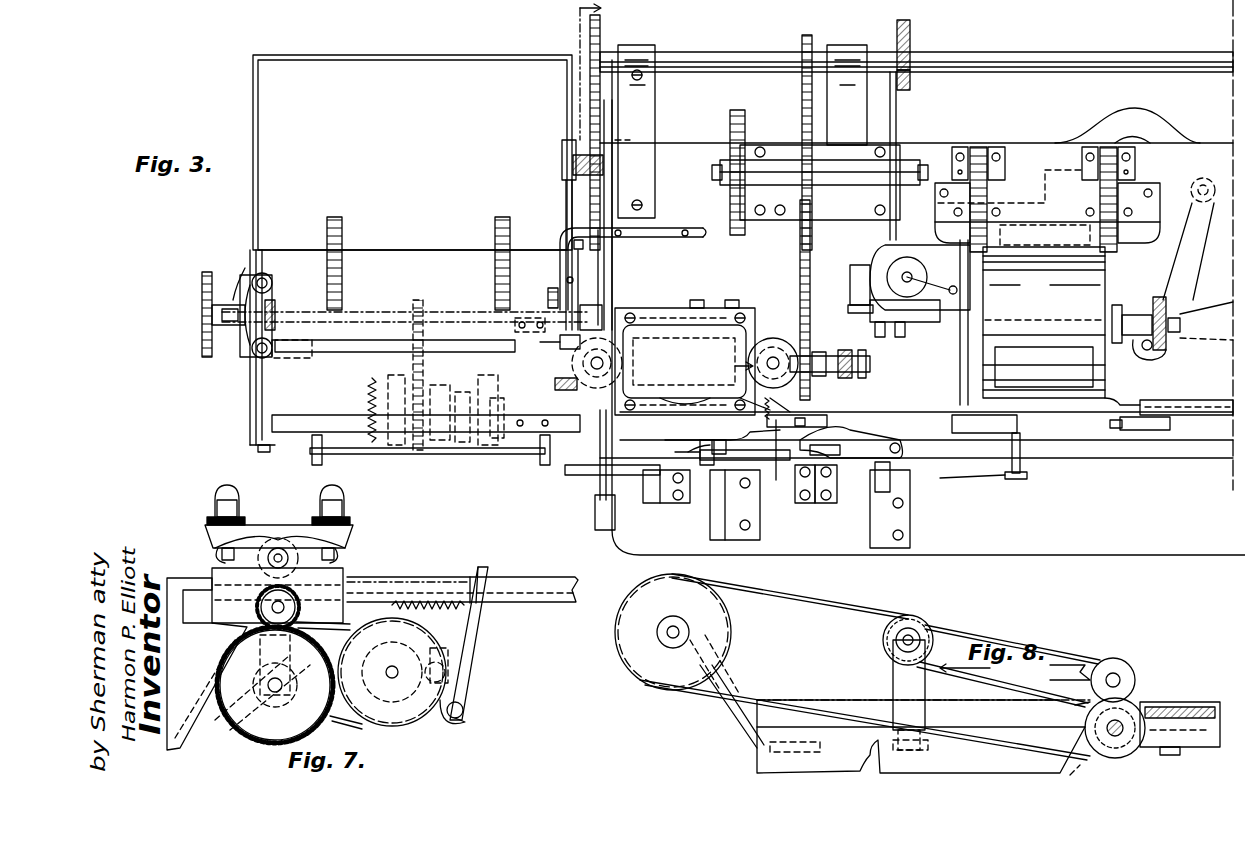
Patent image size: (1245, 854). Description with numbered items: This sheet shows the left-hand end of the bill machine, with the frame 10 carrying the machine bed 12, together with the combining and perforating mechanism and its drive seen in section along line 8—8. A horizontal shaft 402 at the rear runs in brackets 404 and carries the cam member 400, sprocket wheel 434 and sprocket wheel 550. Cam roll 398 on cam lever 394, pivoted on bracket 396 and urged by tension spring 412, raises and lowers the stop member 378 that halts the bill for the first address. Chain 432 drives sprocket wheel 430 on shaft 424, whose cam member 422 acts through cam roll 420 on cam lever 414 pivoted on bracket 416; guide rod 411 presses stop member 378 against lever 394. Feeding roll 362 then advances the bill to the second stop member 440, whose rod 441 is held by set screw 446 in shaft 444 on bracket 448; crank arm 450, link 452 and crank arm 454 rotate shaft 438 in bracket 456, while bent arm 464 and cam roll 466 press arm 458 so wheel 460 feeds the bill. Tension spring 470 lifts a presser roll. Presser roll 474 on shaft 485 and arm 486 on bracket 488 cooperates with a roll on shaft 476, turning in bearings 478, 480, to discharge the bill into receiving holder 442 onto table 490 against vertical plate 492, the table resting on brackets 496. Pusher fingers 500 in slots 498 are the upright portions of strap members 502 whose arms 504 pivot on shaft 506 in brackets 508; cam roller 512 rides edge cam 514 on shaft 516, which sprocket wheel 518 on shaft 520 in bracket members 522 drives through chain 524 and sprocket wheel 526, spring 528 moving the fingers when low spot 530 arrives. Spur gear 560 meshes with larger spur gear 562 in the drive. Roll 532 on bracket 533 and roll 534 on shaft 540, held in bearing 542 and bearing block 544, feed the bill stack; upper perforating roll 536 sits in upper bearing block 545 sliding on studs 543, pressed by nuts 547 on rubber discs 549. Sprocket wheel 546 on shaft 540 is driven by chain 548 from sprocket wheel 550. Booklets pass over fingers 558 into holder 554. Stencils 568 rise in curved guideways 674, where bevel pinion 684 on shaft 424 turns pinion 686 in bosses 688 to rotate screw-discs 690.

In FIG. 3, the section line 8— 8 is at (662, 187).
In FIG. 8, the frame 10 is at (768, 760).
In FIG. 3, the machine bed or table 12 is at (686, 143).
In FIG. 7, the machine bed or table 12 is at (560, 580).
In FIG. 8, the machine bed or table 12 is at (822, 700).
In FIG. 3, the cooperating feeding roll 362 is at (1170, 426).
In FIG. 3, the stop member 378 is at (925, 438).
In FIG. 3, the cam lever 394 is at (898, 102).
In FIG. 3, the upstanding bracket 396 is at (920, 269).
In FIG. 3, the cam roll 398 is at (912, 78).
In FIG. 3, the cam member 400 is at (912, 35).
In FIG. 3, the horizontal shaft 402 is at (1014, 52).
In FIG. 8, the horizontal shaft 402 is at (672, 616).
In FIG. 3, the rearwardly extending brackets 404 is at (650, 115).
In FIG. 8, the rearwardly extending brackets 404 is at (740, 712).
In FIG. 3, the guide rod 411 is at (870, 408).
In FIG. 3, the tension spring 412 is at (848, 302).
In FIG. 3, the cam lever 414 is at (905, 330).
In FIG. 3, the bracket 416 is at (862, 232).
In FIG. 3, the cam roll 420 is at (836, 359).
In FIG. 3, the cam member 422 is at (858, 355).
In FIG. 3, the horizontal shaft 424 is at (855, 370).
In FIG. 3, the sprocket wheel 430 is at (768, 352).
In FIG. 3, the endless chain 432 is at (800, 282).
In FIG. 3, the sprocket wheel 434 is at (814, 45).
In FIG. 3, the shaft 438 is at (865, 442).
In FIG. 3, the second stop member 440 is at (727, 451).
In FIG. 3, the supporting rod 441 is at (722, 437).
In FIG. 3, the work receiving holder 442 is at (248, 382).
In FIG. 3, the shaft 444 is at (700, 440).
In FIG. 3, the set screw 446 is at (678, 444).
In FIG. 3, the vertical bracket 448 is at (755, 545).
In FIG. 3, the crank arm 450 is at (715, 460).
In FIG. 3, the link 452 is at (855, 458).
In FIG. 3, the upstanding crank arm 454 is at (918, 475).
In FIG. 3, the bracket 456 is at (912, 512).
In FIG. 3, the arm 458 is at (839, 447).
In FIG. 3, the rotatable wheel 460 is at (797, 404).
In FIG. 3, the bent arm 464 is at (814, 411).
In FIG. 3, the cam roll 466 is at (842, 484).
In FIG. 3, the tension spring 470 is at (740, 395).
In FIG. 3, the presser roll 474 is at (548, 380).
In FIG. 3, the horizontal shaft 476 is at (613, 272).
In FIG. 3, the bearing 478 is at (595, 510).
In FIG. 3, the bearing 480 is at (604, 168).
In FIG. 3, the shaft 485 is at (598, 440).
In FIG. 3, the arm 486 is at (583, 475).
In FIG. 3, the vertical bracket member 488 is at (660, 503).
In FIG. 3, the table 490 is at (510, 455).
In FIG. 7, the table 490 is at (420, 590).
In FIG. 3, the vertical plate 492 is at (258, 392).
In FIG. 8, the brackets 496 is at (1198, 748).
In FIG. 3, the slots or recesses 498 is at (310, 422).
In FIG. 3, the pusher fingers 500 is at (314, 462).
In FIG. 7, the pusher fingers 500 is at (490, 568).
In FIG. 3, the strap members 502 is at (233, 280).
In FIG. 3, the arms 504 is at (412, 474).
In FIG. 7, the arms 504 is at (475, 640).
In FIG. 7, the rod or shaft 506 is at (465, 718).
In FIG. 3, the brackets 508 is at (430, 400).
In FIG. 7, the brackets 508 is at (463, 710).
In FIG. 3, the cam roller 512 is at (444, 474).
In FIG. 7, the cam roller 512 is at (465, 651).
In FIG. 3, the edge cam 514 is at (467, 407).
In FIG. 7, the edge cam 514 is at (455, 686).
In FIG. 3, the shaft 516 is at (510, 408).
In FIG. 7, the shaft 516 is at (403, 678).
In FIG. 3, the sprocket wheel 518 is at (423, 305).
In FIG. 7, the sprocket wheel 518 is at (296, 665).
In FIG. 7, the shaft 520 is at (277, 695).
In FIG. 7, the bracket members 522 is at (262, 692).
In FIG. 3, the endless sprocket chain 524 is at (440, 404).
In FIG. 7, the endless sprocket chain 524 is at (350, 720).
In FIG. 3, the sprocket wheel 526 is at (435, 372).
In FIG. 7, the sprocket wheel 526 is at (400, 720).
In FIG. 3, the coil tension spring 528 is at (370, 400).
In FIG. 7, the coil tension spring 528 is at (443, 603).
In FIG. 7, the low spot 530 is at (383, 672).
In FIG. 3, the bill feeding and perforating roll 532 is at (552, 290).
In FIG. 8, the bill feeding and perforating roll 532 is at (1128, 664).
In FIG. 3, the bracket 533 is at (562, 248).
In FIG. 8, the bracket 533 is at (1078, 676).
In FIG. 8, the cooperating feed roll 534 is at (1125, 740).
In FIG. 3, the upper perforating roll 536 is at (277, 303).
In FIG. 7, the upper perforating roll 536 is at (282, 540).
In FIG. 3, the shaft 540 is at (388, 315).
In FIG. 7, the shaft 540 is at (297, 607).
In FIG. 8, the shaft 540 is at (1100, 755).
In FIG. 8, the bearing 542 is at (1085, 742).
In FIG. 7, the vertical studs 543 is at (220, 556).
In FIG. 7, the bearing block 544 is at (230, 615).
In FIG. 3, the upper bearing block 545 is at (245, 278).
In FIG. 7, the upper bearing block 545 is at (350, 535).
In FIG. 3, the sprocket wheel 546 is at (598, 310).
In FIG. 3, the nuts 547 is at (266, 273).
In FIG. 7, the nuts 547 is at (222, 480).
In FIG. 3, the sprocket chain 548 is at (600, 253).
In FIG. 8, the sprocket chain 548 is at (838, 632).
In FIG. 7, the soft rubber discs 549 is at (207, 521).
In FIG. 3, the sprocket wheel 550 is at (603, 35).
In FIG. 8, the sprocket wheel 550 is at (715, 615).
In FIG. 3, the receiving hopper or holder 554 is at (420, 60).
In FIG. 3, the supporting fingers 558 is at (493, 226).
In FIG. 3, the spur gear 560 is at (212, 313).
In FIG. 3, the larger spur gear 562 is at (202, 283).
In FIG. 7, the larger spur gear 562 is at (260, 728).
In FIG. 3, the stencils 568 is at (708, 338).
In FIG. 3, the stencil guiding members 674 is at (608, 318).
In FIG. 3, the beveled pinion gear 684 is at (555, 372).
In FIG. 3, the beveled pinion gear 686 is at (684, 361).
In FIG. 3, the bosses 688 is at (503, 328).
In FIG. 3, the screw-discs 690 is at (690, 365).